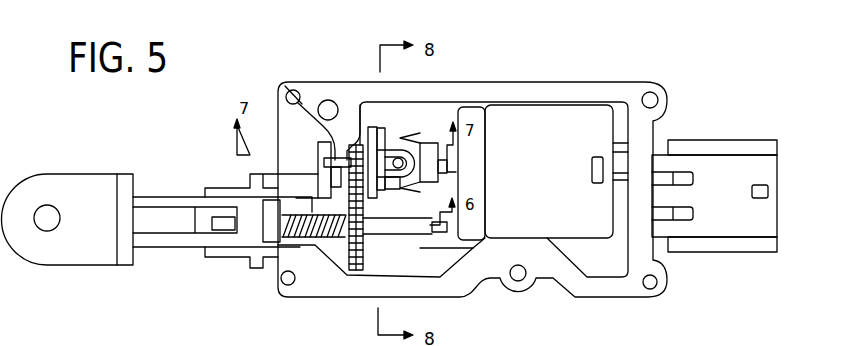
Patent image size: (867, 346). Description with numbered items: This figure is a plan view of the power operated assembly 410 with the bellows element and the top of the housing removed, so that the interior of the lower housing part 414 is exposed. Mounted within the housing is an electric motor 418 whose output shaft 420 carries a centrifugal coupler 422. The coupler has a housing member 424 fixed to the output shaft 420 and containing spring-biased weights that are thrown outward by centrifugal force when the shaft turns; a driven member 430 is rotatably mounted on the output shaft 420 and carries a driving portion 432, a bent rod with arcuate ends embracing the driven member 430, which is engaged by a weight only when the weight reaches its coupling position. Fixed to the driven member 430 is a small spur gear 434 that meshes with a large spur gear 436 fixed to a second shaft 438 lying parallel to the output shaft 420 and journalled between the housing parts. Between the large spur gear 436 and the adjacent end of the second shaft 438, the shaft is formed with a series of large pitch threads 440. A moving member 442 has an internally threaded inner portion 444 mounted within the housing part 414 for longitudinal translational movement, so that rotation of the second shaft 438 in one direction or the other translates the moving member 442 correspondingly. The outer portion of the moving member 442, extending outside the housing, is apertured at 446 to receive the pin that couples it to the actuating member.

The power operated assembly 410 is at (579, 79).
The housing part 414 is at (458, 285).
The electric motor 418 is at (518, 121).
The output shaft 420 is at (291, 92).
The centrifugal coupler 422 is at (419, 133).
The housing member 424 is at (460, 187).
The driven member 430 is at (348, 104).
The driving portion 432 is at (389, 190).
The small spur gear 434 is at (277, 173).
The large spur gear 436 is at (340, 280).
The second shaft 438 is at (485, 236).
The large pitch threads 440 is at (277, 260).
The moving member 442 is at (82, 183).
The inner portion 444 is at (247, 226).
The aperture 446 is at (44, 227).